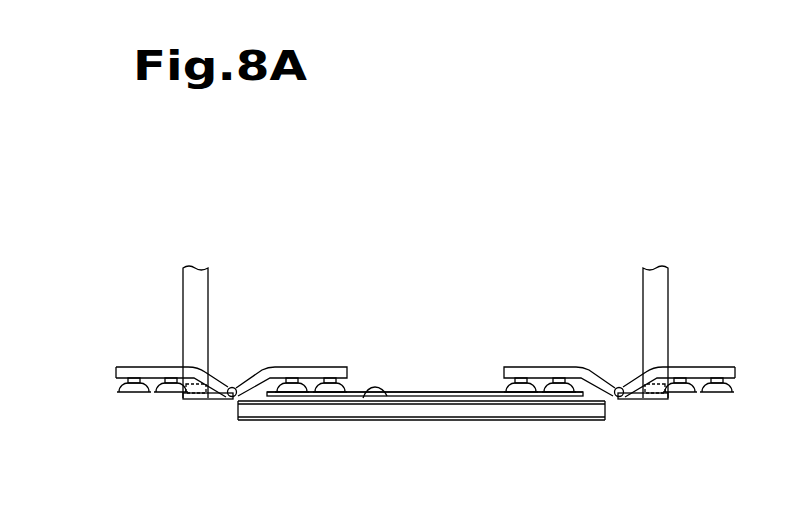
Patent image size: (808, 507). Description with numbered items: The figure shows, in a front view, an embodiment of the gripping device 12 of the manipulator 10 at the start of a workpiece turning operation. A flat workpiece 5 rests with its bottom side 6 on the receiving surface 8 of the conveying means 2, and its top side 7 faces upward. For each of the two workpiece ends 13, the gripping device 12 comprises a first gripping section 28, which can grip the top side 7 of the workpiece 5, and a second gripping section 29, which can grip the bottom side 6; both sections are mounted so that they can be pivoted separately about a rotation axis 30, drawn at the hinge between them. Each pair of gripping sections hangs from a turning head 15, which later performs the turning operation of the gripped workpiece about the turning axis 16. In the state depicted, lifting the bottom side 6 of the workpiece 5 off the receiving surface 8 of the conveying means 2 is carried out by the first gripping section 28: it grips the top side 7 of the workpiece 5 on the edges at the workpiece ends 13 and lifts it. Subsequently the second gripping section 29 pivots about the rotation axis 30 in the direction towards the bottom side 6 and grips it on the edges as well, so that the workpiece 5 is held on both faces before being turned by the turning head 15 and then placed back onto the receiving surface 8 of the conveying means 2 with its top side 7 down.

The conveying means 2 is at (555, 428).
The workpiece 5 is at (410, 392).
The bottom side 6 is at (470, 398).
The top side 7 is at (425, 390).
The receiving surface 8 is at (363, 398).
The manipulator 10 is at (668, 192).
The gripping device 12 is at (422, 197).
The workpiece ends 13 is at (260, 401).
The turning head 15 is at (185, 368).
The turning axis 16 is at (192, 390).
The first gripping section 28 is at (303, 323).
The second gripping section 29 is at (119, 327).
The rotation axis 30 is at (235, 387).